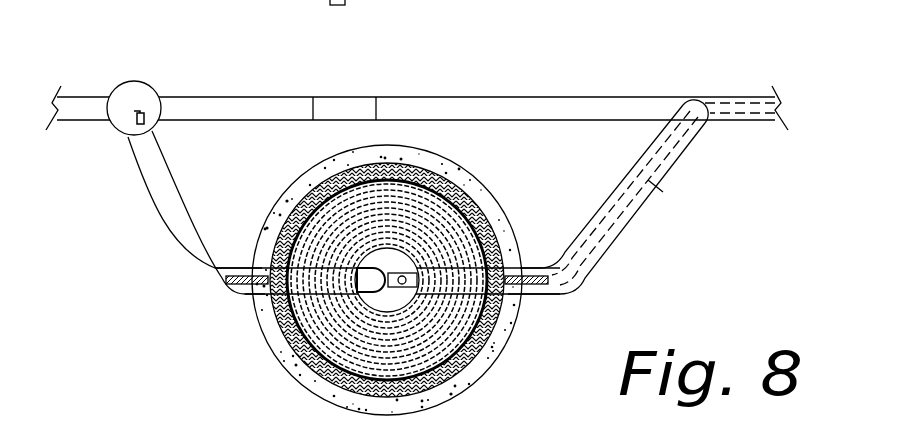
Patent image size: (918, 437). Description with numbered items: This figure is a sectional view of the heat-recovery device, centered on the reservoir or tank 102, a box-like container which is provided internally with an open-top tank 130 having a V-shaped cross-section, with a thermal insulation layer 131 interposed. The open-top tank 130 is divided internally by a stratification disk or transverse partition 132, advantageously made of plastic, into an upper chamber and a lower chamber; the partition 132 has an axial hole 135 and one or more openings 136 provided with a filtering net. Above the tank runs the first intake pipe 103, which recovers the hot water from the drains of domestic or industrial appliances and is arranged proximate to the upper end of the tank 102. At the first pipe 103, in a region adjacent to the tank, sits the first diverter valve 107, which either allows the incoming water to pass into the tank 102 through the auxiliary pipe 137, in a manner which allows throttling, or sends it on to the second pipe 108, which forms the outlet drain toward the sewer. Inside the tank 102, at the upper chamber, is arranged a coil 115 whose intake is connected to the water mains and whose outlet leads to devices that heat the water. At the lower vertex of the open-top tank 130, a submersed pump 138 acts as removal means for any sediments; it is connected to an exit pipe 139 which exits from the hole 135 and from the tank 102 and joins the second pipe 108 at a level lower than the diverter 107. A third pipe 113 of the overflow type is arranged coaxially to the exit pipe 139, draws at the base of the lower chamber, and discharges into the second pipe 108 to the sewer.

The reservoir or tank 102 is at (248, 318).
The first intake pipe 103 is at (87, 112).
The first diverter valve 107 is at (125, 78).
The second pipe 108 is at (607, 107).
The third pipe 113 is at (688, 152).
The coil 115 is at (317, 222).
The open-top tank 130 is at (488, 320).
The thermal insulation layer 131 is at (481, 353).
The stratification disk or transverse partition 132 is at (428, 370).
The axial hole 135 is at (397, 262).
The openings 136 is at (385, 0).
The auxiliary pipe 137 is at (173, 223).
The submersed pump 138 is at (376, 307).
The exit pipe 139 is at (658, 186).